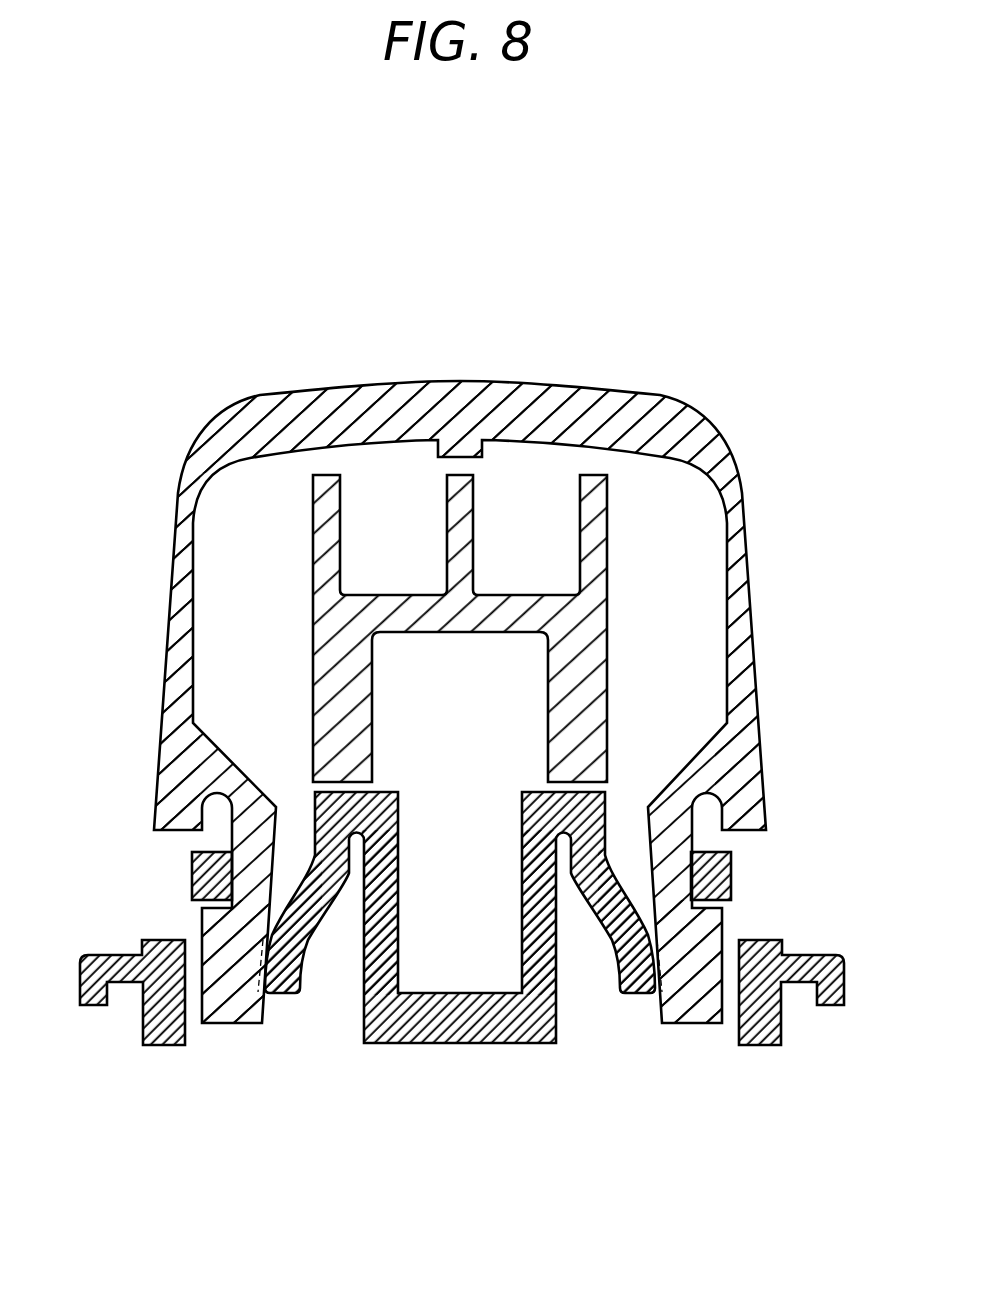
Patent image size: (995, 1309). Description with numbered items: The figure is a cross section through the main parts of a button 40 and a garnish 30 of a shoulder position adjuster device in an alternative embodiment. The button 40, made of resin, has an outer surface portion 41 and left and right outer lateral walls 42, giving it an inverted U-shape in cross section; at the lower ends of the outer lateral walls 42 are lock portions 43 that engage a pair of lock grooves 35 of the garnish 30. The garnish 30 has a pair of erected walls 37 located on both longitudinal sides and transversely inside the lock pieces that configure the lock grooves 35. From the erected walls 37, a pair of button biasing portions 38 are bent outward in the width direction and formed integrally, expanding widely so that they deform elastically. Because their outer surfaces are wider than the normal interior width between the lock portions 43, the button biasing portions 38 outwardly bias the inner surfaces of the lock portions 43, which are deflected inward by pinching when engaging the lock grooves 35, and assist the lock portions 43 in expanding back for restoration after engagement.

The garnish 30 is at (460, 978).
The lock grooves 35 is at (203, 900).
The erected walls 37 is at (362, 943).
The button biasing portions 38 is at (287, 995).
The button 40 is at (461, 659).
The outer surface portion 41 is at (457, 380).
The outer lateral walls 42 is at (165, 658).
The lock portions 43 is at (207, 930).